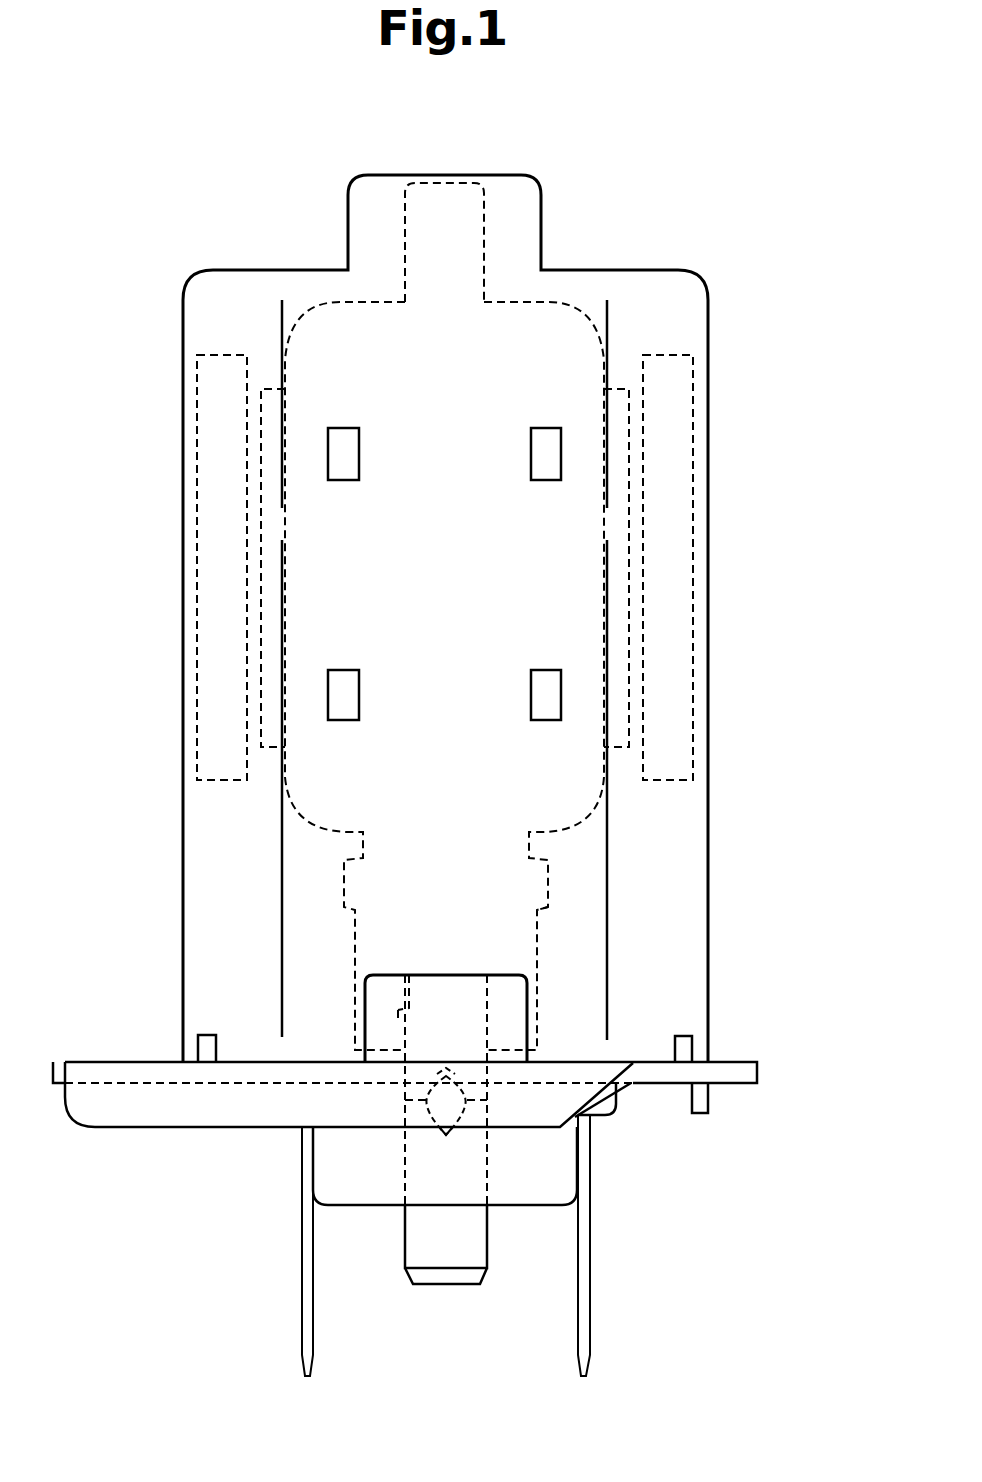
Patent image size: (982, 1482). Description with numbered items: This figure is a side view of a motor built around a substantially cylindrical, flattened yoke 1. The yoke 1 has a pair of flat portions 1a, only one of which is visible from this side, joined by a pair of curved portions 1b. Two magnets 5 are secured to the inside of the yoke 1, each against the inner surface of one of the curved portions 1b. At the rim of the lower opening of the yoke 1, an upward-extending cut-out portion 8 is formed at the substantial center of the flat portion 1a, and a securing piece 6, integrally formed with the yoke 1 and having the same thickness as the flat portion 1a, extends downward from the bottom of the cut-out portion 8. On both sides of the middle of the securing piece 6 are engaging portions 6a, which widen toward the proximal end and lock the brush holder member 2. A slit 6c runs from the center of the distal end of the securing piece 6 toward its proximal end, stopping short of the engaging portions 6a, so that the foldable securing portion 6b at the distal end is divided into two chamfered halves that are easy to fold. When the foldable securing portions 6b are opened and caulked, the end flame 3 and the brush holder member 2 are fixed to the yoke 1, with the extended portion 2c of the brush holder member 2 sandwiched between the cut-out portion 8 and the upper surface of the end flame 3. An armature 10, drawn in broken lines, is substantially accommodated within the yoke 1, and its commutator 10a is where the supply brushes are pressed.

The yoke 1 is at (708, 315).
The flat portion 1a is at (556, 325).
The curved portion 1b is at (203, 816).
The brush holder member 2 is at (528, 1017).
The extended portion 2c is at (440, 983).
The end flame 3 is at (757, 1070).
The magnet 5 is at (197, 563).
The securing piece 6 is at (488, 1040).
The engaging portion 6a is at (405, 1022).
The foldable securing portion 6b is at (446, 1138).
The slit 6c is at (444, 1062).
The cut-out portion 8 is at (385, 985).
The armature 10 is at (585, 823).
The commutator 10a is at (570, 950).